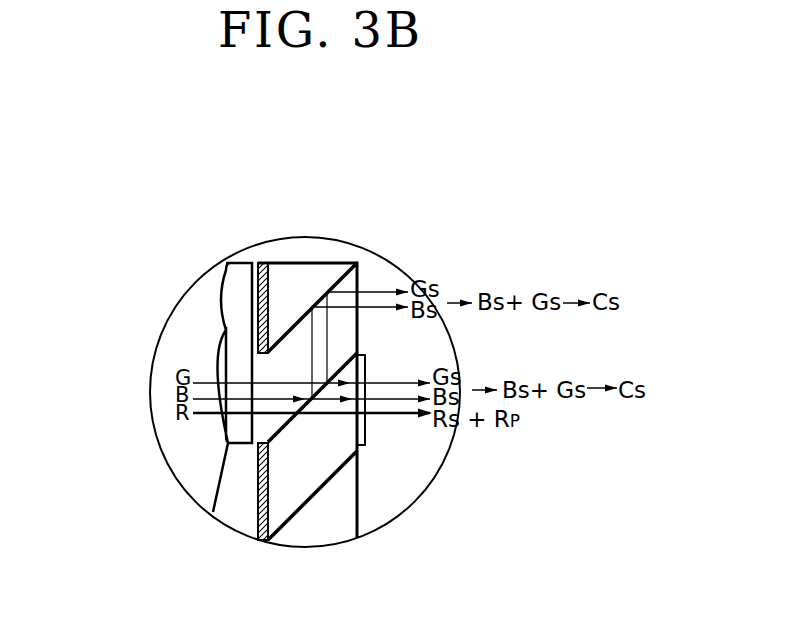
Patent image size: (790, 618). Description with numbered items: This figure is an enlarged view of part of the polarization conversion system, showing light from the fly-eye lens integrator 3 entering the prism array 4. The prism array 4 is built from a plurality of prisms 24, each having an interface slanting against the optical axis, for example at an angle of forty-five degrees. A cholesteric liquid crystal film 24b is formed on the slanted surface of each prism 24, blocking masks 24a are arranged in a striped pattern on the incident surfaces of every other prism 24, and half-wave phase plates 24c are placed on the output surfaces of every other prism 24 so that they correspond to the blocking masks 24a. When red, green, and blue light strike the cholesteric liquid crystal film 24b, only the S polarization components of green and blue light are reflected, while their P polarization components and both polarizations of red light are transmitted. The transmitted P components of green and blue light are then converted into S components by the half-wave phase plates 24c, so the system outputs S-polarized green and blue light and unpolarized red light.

The fly-eye lens integrator 3 is at (233, 283).
The prism array 4 is at (328, 259).
The prism 24 is at (330, 528).
The blocking mask 24a is at (258, 530).
The cholesteric liquid crystal film 24b is at (287, 428).
The λ/2 phase plate 24c is at (363, 445).